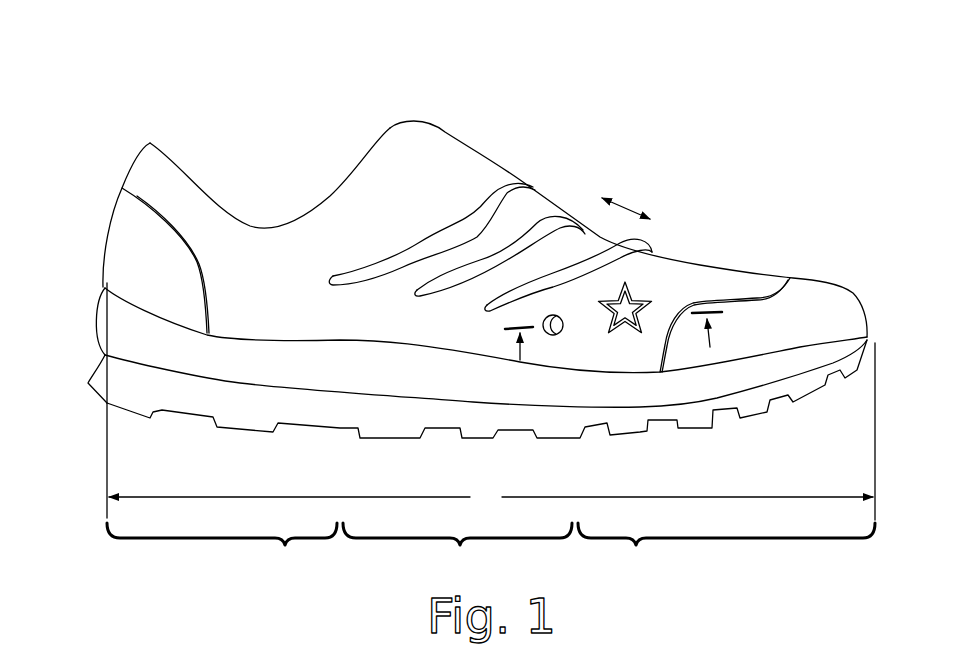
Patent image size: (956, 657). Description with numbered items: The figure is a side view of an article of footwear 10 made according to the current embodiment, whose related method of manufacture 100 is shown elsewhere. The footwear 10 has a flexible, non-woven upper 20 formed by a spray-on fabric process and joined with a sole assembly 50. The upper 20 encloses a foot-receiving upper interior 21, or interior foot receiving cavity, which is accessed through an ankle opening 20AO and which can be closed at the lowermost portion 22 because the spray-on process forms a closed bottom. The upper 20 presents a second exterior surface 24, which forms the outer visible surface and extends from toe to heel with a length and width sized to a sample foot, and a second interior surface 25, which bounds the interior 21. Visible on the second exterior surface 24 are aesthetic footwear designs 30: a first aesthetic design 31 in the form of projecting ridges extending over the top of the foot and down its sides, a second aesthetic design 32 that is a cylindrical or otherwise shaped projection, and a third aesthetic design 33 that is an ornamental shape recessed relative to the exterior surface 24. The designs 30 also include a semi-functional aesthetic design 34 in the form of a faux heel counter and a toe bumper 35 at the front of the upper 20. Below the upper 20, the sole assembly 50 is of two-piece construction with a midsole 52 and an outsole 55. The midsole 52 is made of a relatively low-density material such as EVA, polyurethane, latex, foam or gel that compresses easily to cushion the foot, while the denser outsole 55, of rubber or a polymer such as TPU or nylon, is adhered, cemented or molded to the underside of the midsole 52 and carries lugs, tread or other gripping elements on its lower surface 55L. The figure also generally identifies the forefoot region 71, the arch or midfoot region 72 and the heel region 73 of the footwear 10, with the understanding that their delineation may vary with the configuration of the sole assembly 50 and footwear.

The footwear 10 is at (114, 94).
The upper 20 is at (501, 147).
The ankle opening 20AO is at (293, 177).
The upper interior 21 is at (373, 248).
The lowermost portion 22 is at (104, 288).
The second exterior surface 24 is at (673, 273).
The second interior surface 25 is at (415, 173).
The aesthetic footwear designs 30 is at (557, 311).
The first aesthetic design 31 is at (370, 283).
The second aesthetic design 32 is at (560, 336).
The third aesthetic design 33 is at (632, 337).
The semi-functional aesthetic design 34 is at (200, 273).
The toe bumper 35 is at (817, 278).
The sole assembly 50 is at (62, 285).
The midsole 52 is at (100, 322).
The outsole 55 is at (92, 376).
The lower surface 55L is at (243, 433).
The forefoot region 71 is at (726, 545).
The arch region 72 is at (457, 545).
The heel region 73 is at (222, 545).
The method of manufacture 100 is at (217, 656).